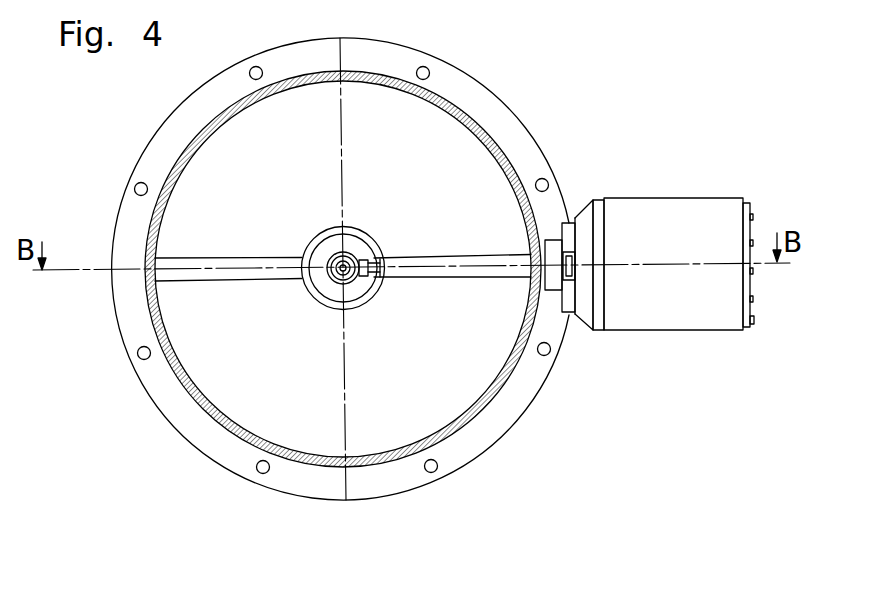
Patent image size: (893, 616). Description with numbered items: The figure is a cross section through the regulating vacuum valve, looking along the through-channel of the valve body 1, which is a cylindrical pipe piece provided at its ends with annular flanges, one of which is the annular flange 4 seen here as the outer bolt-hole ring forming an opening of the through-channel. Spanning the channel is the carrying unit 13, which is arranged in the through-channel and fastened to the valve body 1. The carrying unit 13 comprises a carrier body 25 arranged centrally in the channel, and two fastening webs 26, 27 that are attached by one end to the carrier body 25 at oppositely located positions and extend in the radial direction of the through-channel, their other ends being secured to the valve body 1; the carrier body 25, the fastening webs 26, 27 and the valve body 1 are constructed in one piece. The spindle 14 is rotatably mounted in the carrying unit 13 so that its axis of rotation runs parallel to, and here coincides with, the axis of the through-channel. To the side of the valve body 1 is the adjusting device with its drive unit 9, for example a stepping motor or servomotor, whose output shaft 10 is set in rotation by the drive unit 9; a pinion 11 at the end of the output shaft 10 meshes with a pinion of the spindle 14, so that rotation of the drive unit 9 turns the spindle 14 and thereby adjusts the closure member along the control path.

The valve body 1 is at (477, 123).
The annular flange 4 is at (502, 420).
The drive unit 9 is at (665, 217).
The output shaft 10 is at (379, 259).
The pinion 11 is at (367, 262).
The carrying unit 13 is at (357, 322).
The spindle 14 is at (333, 260).
The carrier body 25 is at (330, 303).
The fastening web 26 is at (207, 280).
The fastening web 27 is at (408, 277).